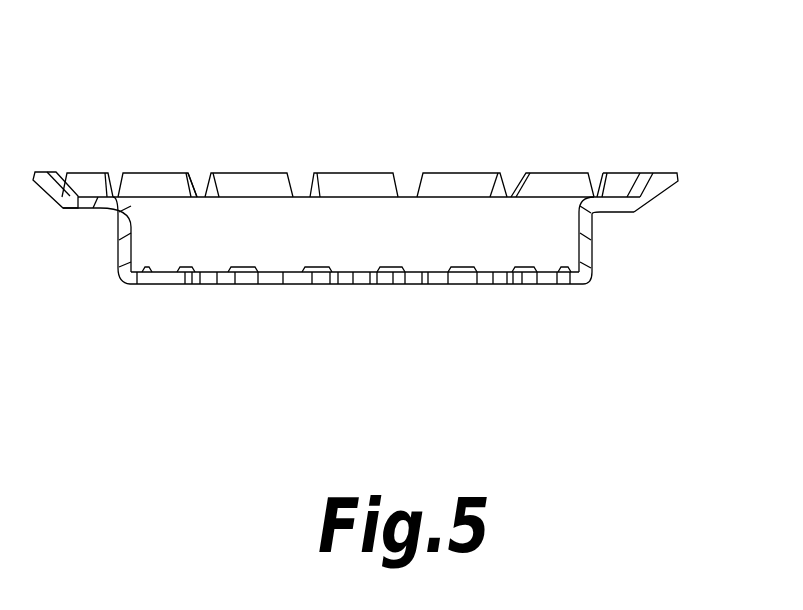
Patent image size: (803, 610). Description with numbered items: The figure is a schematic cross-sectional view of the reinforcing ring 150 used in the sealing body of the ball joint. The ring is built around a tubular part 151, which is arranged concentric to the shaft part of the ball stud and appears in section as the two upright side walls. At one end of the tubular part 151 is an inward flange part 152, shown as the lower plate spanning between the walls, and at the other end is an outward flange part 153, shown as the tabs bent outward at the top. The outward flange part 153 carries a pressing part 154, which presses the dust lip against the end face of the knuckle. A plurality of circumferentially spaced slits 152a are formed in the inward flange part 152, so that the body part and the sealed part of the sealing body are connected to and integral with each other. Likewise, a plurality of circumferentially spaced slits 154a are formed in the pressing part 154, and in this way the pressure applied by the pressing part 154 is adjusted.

The reinforcing ring 150 is at (622, 97).
The tubular part 151 is at (585, 237).
The inward flange part 152 is at (412, 284).
The slits 152a is at (388, 284).
The outward flange part 153 is at (96, 210).
The pressing part 154 is at (258, 180).
The slits 154a is at (190, 188).